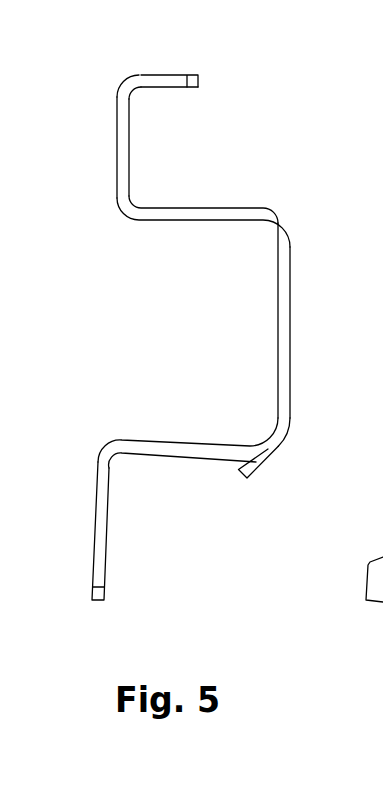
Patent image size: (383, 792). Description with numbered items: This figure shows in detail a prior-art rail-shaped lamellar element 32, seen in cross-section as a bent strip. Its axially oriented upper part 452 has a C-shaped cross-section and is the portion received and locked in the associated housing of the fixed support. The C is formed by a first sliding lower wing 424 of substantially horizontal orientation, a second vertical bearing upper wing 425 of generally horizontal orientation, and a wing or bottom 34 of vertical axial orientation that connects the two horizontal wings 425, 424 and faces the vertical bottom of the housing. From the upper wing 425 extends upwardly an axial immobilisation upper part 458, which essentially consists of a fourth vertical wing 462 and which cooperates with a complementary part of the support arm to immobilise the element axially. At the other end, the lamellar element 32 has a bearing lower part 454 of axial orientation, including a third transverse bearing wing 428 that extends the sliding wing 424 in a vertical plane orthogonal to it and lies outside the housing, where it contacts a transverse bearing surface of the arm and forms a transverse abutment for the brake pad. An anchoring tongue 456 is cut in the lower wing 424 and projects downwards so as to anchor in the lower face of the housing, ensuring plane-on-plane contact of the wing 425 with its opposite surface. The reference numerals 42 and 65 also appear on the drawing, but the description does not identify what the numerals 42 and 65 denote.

The rail-shaped lamellar element 32 is at (174, 70).
The wing or bottom 34 is at (188, 307).
The adjacent member 42 is at (369, 528).
The flange face 65 is at (165, 82).
The first sliding lower wing 424 is at (205, 450).
The second vertical bearing upper wing 425 is at (206, 215).
The third transverse bearing wing 428 is at (108, 545).
The C-shaped cross-section upper part 452 is at (298, 290).
The bearing lower part 454 is at (128, 501).
The anchoring tongue 456 is at (243, 475).
The axial immobilisation upper part 458 is at (110, 121).
The fourth vertical wing 462 is at (117, 148).